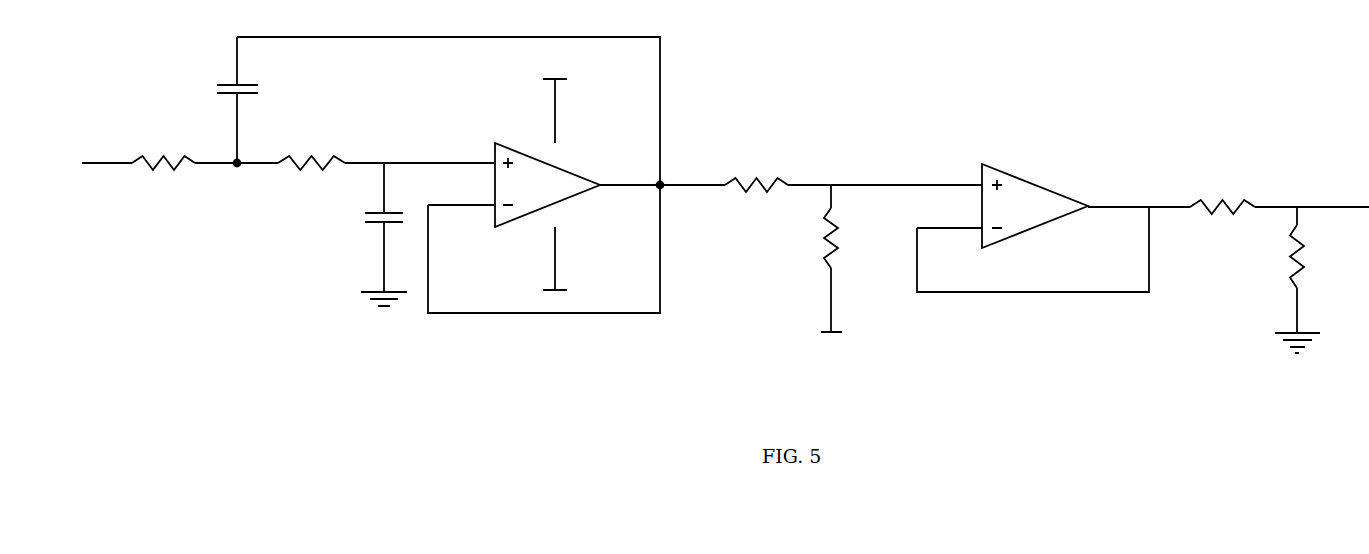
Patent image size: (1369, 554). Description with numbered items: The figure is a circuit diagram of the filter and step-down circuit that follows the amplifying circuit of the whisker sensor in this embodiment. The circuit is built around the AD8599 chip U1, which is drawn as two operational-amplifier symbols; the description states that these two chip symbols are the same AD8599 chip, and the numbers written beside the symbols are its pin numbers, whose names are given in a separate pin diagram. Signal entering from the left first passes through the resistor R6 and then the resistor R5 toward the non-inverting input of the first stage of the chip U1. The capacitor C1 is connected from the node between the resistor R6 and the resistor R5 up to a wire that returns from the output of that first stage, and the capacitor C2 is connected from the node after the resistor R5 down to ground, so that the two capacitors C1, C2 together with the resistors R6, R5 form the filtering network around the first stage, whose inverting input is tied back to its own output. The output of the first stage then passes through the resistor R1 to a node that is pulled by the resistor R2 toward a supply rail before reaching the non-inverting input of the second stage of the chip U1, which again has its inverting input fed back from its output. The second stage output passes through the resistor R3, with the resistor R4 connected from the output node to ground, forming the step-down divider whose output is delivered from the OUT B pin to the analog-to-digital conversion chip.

The resistor R6 is at (160, 166).
The resistor R5 is at (309, 166).
The capacitor C1 is at (253, 101).
The capacitor C2 is at (364, 247).
The AD8599 chip U1 is at (788, 188).
The resistor R1 is at (755, 186).
The resistor R2 is at (840, 269).
The resistor R3 is at (1221, 209).
The resistor R4 is at (1303, 280).